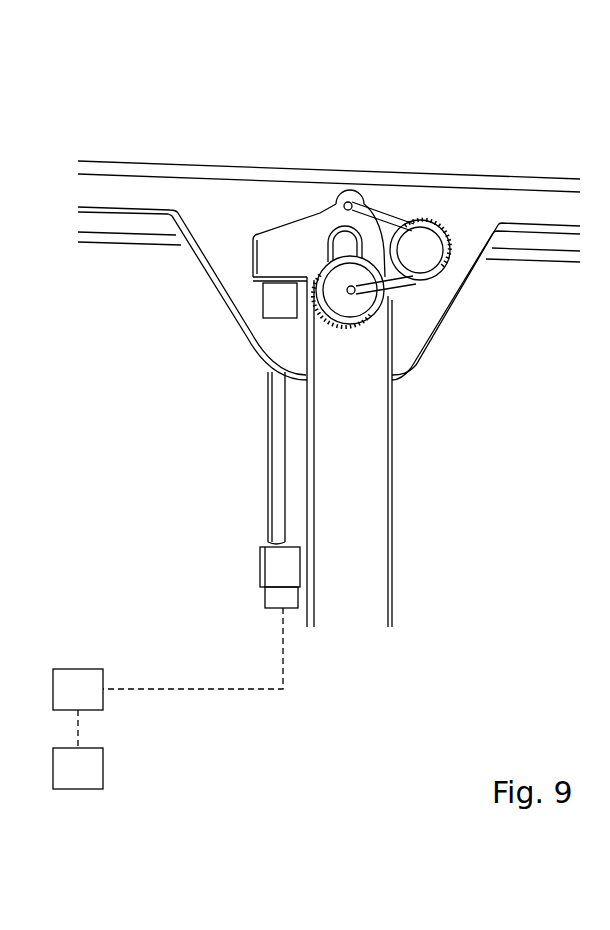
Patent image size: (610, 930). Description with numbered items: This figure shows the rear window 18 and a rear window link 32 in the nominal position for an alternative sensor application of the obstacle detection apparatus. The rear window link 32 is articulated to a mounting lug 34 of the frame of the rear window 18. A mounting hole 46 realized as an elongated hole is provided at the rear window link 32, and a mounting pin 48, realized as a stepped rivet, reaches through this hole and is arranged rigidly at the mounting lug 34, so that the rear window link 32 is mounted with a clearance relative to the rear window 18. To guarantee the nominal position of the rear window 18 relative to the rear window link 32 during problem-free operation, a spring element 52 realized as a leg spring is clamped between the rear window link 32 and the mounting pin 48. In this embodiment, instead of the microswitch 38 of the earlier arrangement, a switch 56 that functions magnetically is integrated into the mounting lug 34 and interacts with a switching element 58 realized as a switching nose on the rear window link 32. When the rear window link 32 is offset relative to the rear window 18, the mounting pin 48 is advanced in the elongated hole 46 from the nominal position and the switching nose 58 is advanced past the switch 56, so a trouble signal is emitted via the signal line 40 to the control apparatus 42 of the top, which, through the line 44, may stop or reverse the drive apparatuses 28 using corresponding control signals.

The rear window 18 is at (100, 152).
The drive apparatuses 28 is at (78, 768).
The rear window link 32 is at (373, 525).
The mounting lug 34 is at (442, 303).
The microswitch 38 is at (486, 182).
The signal line 40 is at (282, 648).
The control apparatus 42 is at (168, 659).
The line 44 is at (78, 725).
The mounting hole 46 is at (340, 236).
The mounting pin 48 is at (365, 310).
The spring element 52 is at (417, 221).
The switch 56 is at (277, 303).
The switching element 58 is at (287, 252).